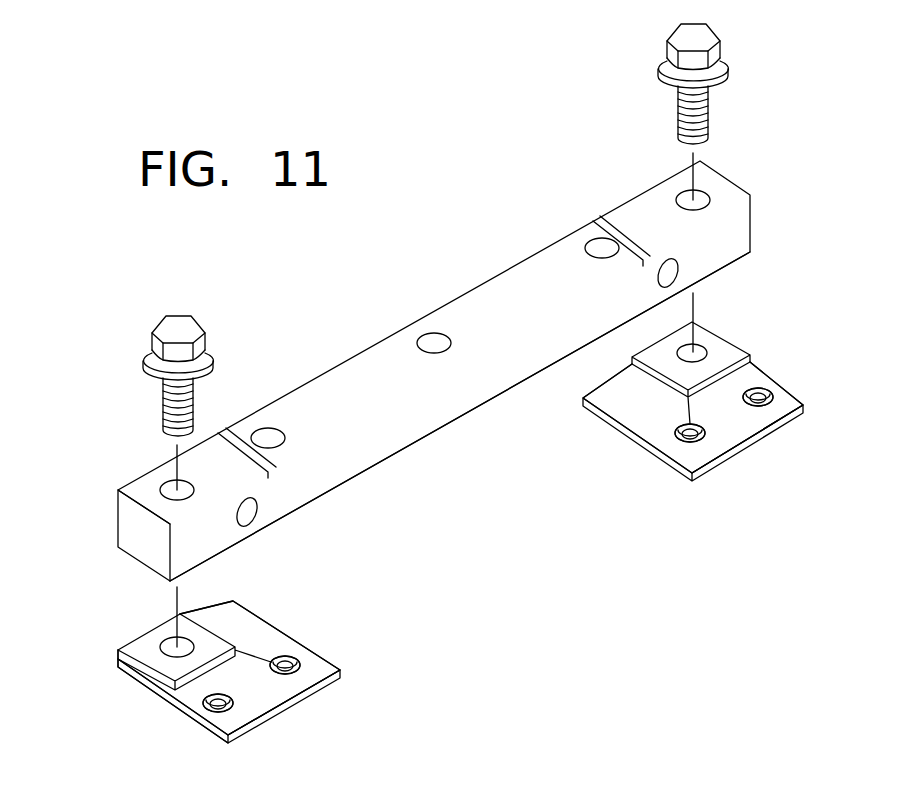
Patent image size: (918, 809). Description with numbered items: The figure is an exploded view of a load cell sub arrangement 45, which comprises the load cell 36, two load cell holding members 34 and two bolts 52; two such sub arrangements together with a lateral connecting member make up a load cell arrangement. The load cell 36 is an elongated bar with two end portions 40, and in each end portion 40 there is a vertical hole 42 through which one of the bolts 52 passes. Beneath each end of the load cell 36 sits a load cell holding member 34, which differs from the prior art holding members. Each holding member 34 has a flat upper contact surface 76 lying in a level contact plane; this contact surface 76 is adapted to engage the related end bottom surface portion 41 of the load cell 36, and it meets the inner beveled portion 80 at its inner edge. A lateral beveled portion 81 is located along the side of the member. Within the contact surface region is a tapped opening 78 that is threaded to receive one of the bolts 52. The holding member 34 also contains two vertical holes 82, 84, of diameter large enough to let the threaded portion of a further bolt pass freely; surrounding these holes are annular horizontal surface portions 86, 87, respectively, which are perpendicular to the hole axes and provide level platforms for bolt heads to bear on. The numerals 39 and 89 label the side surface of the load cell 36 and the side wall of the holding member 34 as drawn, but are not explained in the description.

The load cell holding member 34 is at (760, 422).
The load cell 36 is at (383, 358).
The side surface of bar 39 is at (465, 380).
The end portion 40 is at (142, 496).
The end bottom surface portion 41 is at (197, 570).
The vertical hole 42 is at (166, 487).
The load cell sub arrangement 45 is at (192, 278).
The bolt 52 is at (173, 333).
The upper contact surface 76 is at (720, 352).
The tapped opening 78 is at (698, 352).
The inner beveled portion 80 is at (635, 415).
The lateral beveled portion 81 is at (740, 428).
The vertical hole 82 is at (772, 397).
The vertical hole 84 is at (685, 441).
The annular horizontal surface portion 86 is at (758, 386).
The annular horizontal surface portion 87 is at (680, 426).
The plate side wall 89 is at (133, 682).